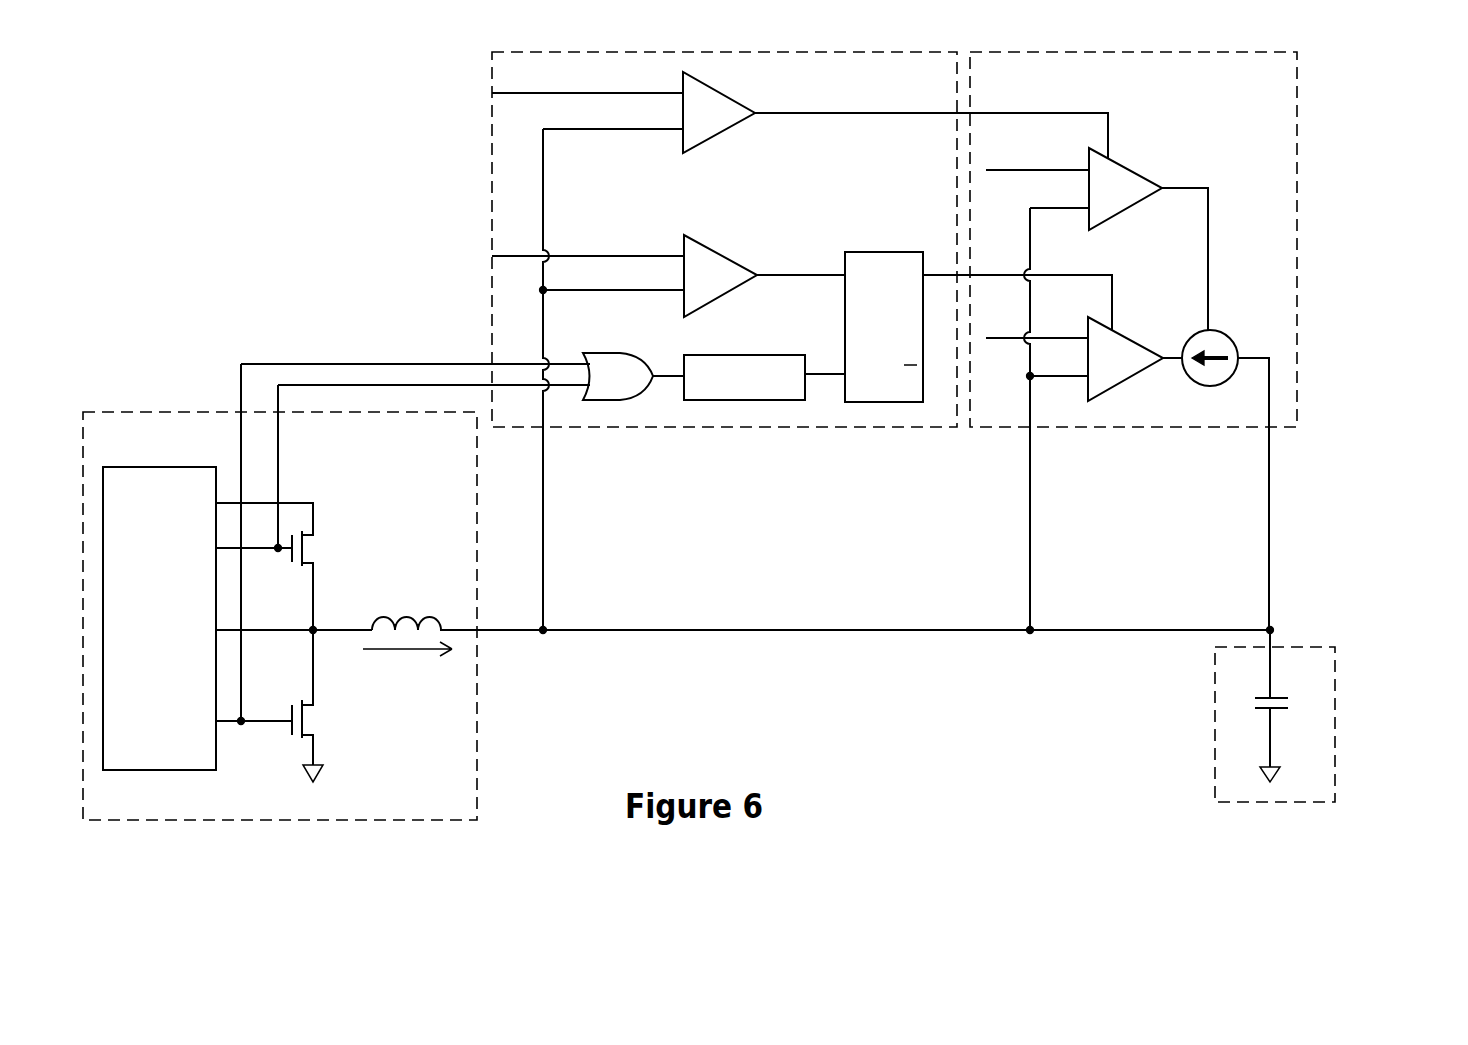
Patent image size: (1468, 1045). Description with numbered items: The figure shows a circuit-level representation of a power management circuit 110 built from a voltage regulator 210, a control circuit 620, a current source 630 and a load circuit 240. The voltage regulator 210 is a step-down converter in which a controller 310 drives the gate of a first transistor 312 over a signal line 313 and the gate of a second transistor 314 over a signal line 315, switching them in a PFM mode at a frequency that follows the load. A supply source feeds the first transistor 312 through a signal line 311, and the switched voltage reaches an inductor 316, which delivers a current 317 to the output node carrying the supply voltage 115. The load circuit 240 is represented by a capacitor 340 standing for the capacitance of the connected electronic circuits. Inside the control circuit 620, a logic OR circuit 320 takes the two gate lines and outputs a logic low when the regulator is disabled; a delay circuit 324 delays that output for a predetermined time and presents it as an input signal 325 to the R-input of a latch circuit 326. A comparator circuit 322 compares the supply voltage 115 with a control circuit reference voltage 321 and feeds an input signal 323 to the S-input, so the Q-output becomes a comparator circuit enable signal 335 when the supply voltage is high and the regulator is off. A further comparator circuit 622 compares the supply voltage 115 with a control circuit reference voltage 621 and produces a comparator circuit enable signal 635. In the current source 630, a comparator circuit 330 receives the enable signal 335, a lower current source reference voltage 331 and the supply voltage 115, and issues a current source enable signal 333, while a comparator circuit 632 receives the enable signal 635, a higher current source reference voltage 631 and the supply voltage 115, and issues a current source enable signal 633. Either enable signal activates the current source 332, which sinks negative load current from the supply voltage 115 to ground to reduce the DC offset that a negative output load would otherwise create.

The power management circuit 110 is at (1372, 115).
The voltage regulator 210 is at (468, 445).
The controller 310 is at (158, 467).
The signal line 311 is at (300, 503).
The first transistor 312 is at (318, 551).
The signal line 313 is at (254, 548).
The second transistor 314 is at (320, 720).
The signal line 315 is at (264, 721).
The inductor 316 is at (388, 616).
The current 317 is at (424, 654).
The supply voltage 115 is at (790, 629).
The load circuit 240 is at (1330, 677).
The capacitor 340 is at (1251, 708).
The control circuit 620 is at (953, 84).
The control circuit reference voltage 621 is at (597, 94).
The comparator circuit 622 is at (715, 96).
The logic OR circuit 320 is at (646, 388).
The control circuit reference voltage 321 is at (598, 256).
The comparator circuit 322 is at (715, 258).
The input signal 323 is at (800, 274).
The delay circuit 324 is at (798, 388).
The input signal 325 is at (820, 373).
The latch circuit 326 is at (904, 349).
The current source 630 is at (1290, 84).
The current source reference voltage 631 is at (1054, 169).
The comparator circuit 632 is at (1120, 164).
The current source enable signal 633 is at (1208, 252).
The comparator circuit enable signal 635 is at (1072, 112).
The comparator circuit 330 is at (1120, 332).
The current source reference voltage 331 is at (1054, 338).
The current source 332 is at (1231, 337).
The current source enable signal 333 is at (1170, 356).
The comparator circuit enable signal 335 is at (1072, 276).